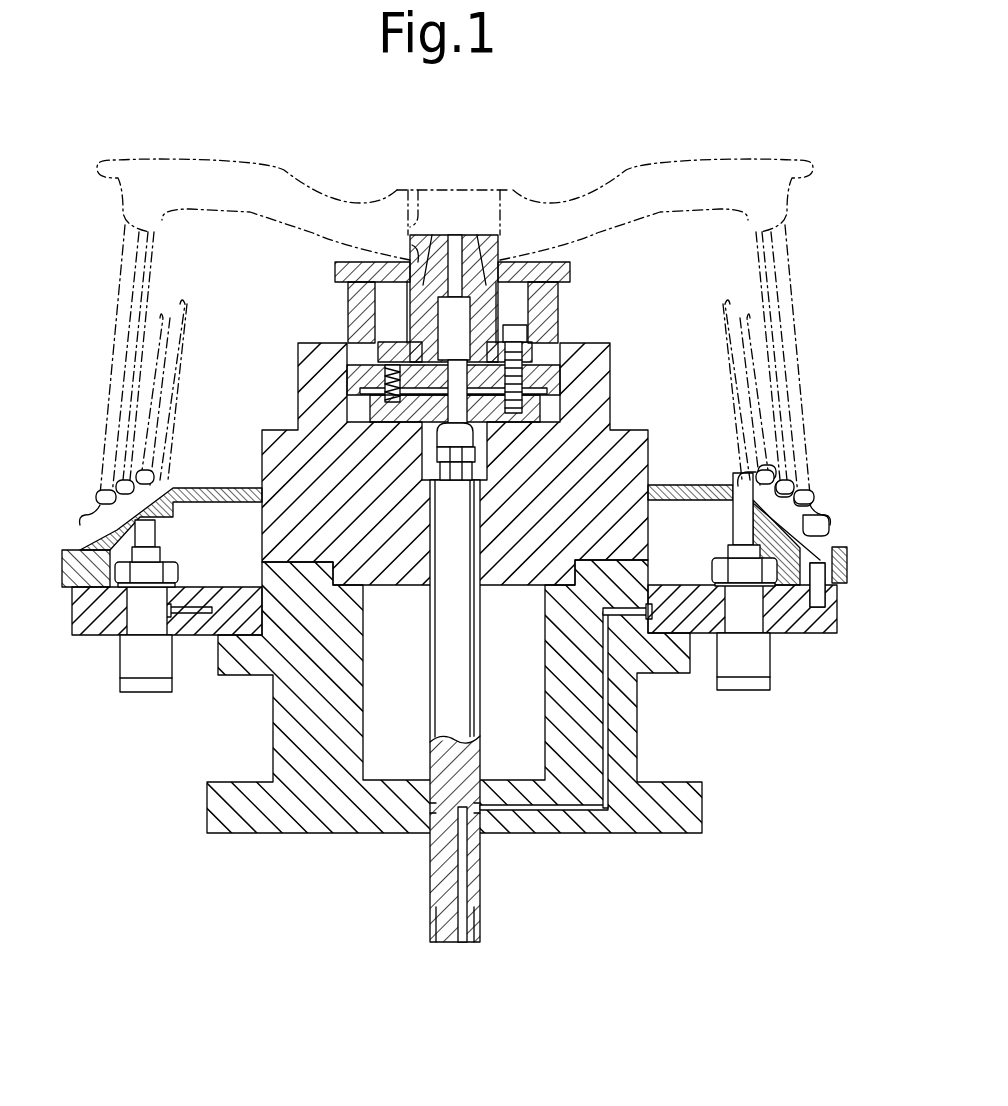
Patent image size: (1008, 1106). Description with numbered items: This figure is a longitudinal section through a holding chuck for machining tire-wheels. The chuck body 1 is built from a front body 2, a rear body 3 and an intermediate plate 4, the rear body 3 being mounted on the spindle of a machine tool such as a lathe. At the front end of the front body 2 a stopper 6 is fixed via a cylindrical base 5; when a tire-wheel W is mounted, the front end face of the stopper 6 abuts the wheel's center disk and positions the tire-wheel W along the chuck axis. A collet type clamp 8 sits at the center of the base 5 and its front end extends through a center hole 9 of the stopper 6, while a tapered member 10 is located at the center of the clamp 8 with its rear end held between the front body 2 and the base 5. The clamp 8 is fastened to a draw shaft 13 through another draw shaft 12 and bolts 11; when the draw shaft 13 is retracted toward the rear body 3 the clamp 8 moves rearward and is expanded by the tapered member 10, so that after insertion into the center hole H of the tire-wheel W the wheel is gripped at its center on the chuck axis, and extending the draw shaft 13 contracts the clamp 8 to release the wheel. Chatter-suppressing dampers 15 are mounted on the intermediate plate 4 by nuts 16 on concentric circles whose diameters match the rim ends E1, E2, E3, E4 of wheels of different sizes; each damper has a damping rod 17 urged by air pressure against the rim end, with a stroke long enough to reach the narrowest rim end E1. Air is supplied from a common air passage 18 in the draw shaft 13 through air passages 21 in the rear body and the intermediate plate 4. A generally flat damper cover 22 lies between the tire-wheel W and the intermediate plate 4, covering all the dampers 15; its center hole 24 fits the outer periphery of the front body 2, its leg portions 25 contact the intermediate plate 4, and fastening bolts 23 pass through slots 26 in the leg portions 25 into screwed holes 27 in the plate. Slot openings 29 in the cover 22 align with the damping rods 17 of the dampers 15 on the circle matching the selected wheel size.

The chuck body 1 is at (309, 842).
The front body 2 is at (300, 382).
The rear body 3 is at (290, 733).
The intermediate plate 4 is at (95, 636).
The cylindrical base 5 is at (548, 313).
The stopper 6 is at (567, 272).
The collet type clamp 8 is at (487, 240).
The center hole 9 is at (410, 252).
The tapered member 10 is at (445, 238).
The bolts 11 is at (510, 328).
The draw shaft 12 is at (492, 414).
The draw shaft 13 is at (481, 880).
The chatter-suppressing dampers 15 is at (146, 693).
The nuts 16 is at (176, 572).
The damping rod 17 is at (152, 533).
The air passage 18 is at (462, 870).
The air passages 21 is at (207, 617).
The damper cover 22 is at (210, 488).
The fastening bolts 23 is at (817, 535).
The center hole 24 is at (270, 470).
The leg portions 25 is at (90, 548).
The slot 26 is at (846, 558).
The screwed holes 27 is at (837, 626).
The slot openings 29 is at (740, 478).
The tire-wheel W is at (284, 160).
The center hole H is at (418, 225).
The rim end E1 is at (805, 444).
The rim end E2 is at (822, 464).
The rim end E3 is at (836, 492).
The rim end E4 is at (849, 516).